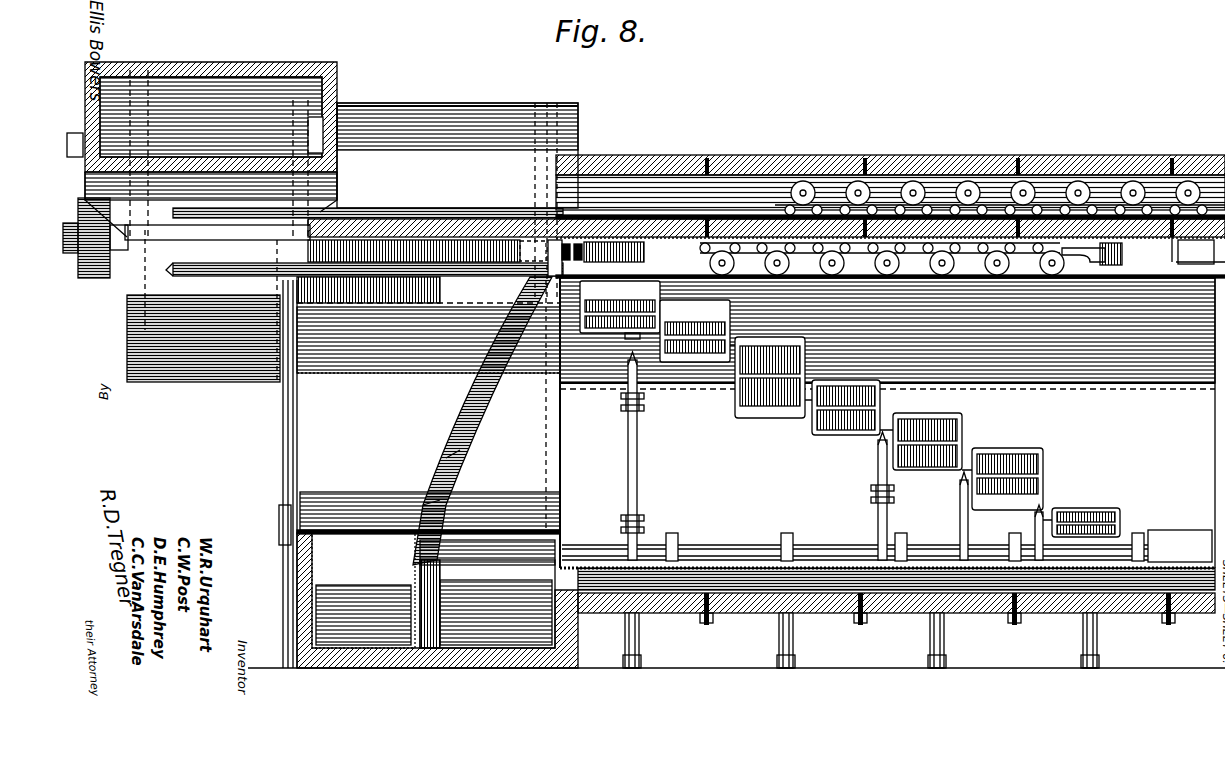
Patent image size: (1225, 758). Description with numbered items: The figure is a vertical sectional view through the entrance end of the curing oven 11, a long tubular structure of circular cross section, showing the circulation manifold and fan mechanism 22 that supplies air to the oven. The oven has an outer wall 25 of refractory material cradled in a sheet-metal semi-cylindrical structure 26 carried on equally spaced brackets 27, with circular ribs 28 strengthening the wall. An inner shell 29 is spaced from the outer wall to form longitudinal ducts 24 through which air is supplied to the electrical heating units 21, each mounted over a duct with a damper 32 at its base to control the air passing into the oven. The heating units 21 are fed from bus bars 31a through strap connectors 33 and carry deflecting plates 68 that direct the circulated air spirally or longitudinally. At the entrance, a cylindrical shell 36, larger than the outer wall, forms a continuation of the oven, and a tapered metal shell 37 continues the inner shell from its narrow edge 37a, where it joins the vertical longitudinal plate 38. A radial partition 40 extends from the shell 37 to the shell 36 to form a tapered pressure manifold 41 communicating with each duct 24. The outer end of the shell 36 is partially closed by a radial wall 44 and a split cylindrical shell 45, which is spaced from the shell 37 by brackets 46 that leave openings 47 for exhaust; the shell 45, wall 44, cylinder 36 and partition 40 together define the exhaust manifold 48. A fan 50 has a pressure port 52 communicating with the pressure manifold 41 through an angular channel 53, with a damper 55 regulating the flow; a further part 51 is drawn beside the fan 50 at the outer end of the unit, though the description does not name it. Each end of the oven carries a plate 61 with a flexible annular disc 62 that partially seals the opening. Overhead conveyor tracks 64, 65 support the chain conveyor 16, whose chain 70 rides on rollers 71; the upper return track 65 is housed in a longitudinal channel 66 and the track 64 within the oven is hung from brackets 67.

The curing oven 11 is at (887, 423).
The overhead chain conveyor 16 is at (1158, 200).
The electrical heating unit 21 is at (920, 415).
The circulation manifold and fan mechanism 22 is at (412, 104).
The longitudinal duct 24 is at (750, 590).
The outer wall 25 is at (1130, 603).
The semi-cylindrical structure 26 is at (950, 616).
The bracket 27 is at (641, 652).
The circular rib 28 is at (703, 226).
The inner shell 29 is at (828, 544).
The bus bar 31a is at (718, 544).
The damper 32 is at (1170, 563).
The strap connector 33 is at (640, 455).
The cylindrical shell 36 is at (448, 668).
The metal shell 37 is at (566, 478).
The narrow edge 37a is at (545, 272).
The vertical longitudinal plate 38 is at (308, 252).
The radial partition 40 is at (442, 578).
The pressure manifold 41 is at (487, 594).
The radial wall 44 is at (297, 598).
The split cylindrical shell 45 is at (428, 420).
The bracket 46 is at (456, 457).
The opening 47 is at (446, 505).
The exhaust manifold 48 is at (363, 590).
The fan 50 is at (182, 374).
The handle 51 is at (90, 280).
The pressure port 52 is at (160, 226).
The angular channel 53 is at (262, 77).
The damper 55 is at (152, 78).
The plate 61 is at (283, 555).
The flexible annular disc 62 is at (279, 516).
The overhead conveyor track 64 is at (215, 270).
The overhead conveyor track 65 is at (499, 210).
The longitudinal channel 66 is at (832, 156).
The bracket 67 is at (1186, 250).
The deflecting plate 68 is at (757, 392).
The chain 70 is at (943, 205).
The roller 71 is at (800, 182).